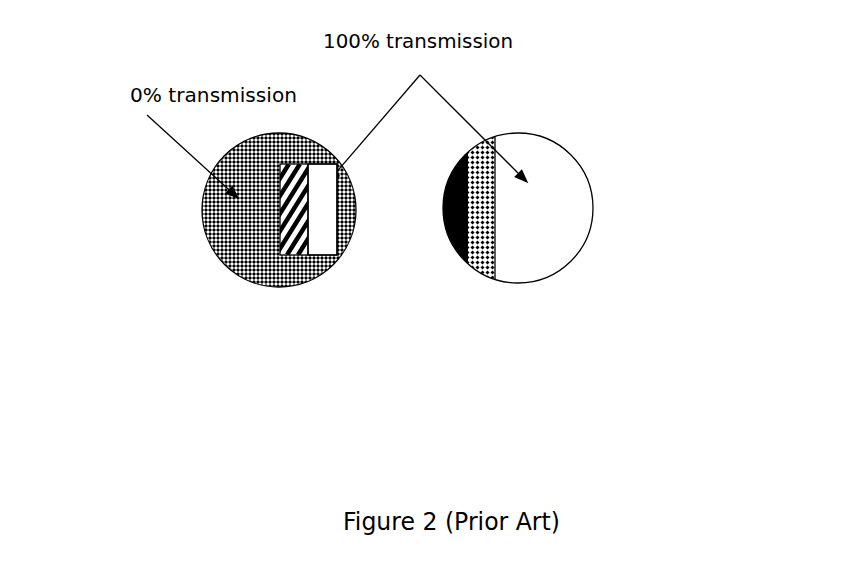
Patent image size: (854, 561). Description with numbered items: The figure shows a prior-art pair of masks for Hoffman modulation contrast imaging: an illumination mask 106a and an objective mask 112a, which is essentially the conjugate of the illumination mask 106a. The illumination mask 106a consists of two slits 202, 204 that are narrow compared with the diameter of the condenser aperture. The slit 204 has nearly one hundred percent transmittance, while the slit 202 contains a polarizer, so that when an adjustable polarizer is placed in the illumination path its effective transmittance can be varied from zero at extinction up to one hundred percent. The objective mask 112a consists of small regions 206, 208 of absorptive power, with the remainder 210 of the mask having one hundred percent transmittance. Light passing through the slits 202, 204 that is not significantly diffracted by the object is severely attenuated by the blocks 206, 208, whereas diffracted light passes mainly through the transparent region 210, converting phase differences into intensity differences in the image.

The illumination mask 106a is at (194, 210).
The objective mask 112a is at (595, 208).
The slit 202 is at (289, 267).
The slit 204 is at (337, 230).
The region of absorptive power 206 is at (440, 271).
The region of absorptive power 208 is at (495, 294).
The transparent region 210 is at (562, 173).